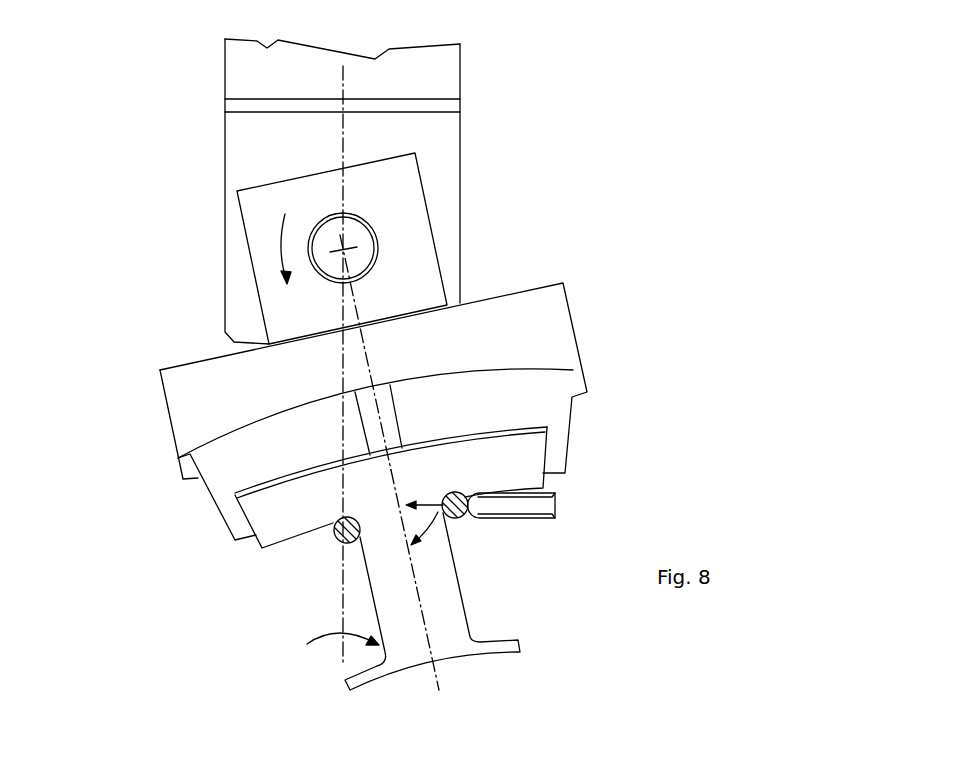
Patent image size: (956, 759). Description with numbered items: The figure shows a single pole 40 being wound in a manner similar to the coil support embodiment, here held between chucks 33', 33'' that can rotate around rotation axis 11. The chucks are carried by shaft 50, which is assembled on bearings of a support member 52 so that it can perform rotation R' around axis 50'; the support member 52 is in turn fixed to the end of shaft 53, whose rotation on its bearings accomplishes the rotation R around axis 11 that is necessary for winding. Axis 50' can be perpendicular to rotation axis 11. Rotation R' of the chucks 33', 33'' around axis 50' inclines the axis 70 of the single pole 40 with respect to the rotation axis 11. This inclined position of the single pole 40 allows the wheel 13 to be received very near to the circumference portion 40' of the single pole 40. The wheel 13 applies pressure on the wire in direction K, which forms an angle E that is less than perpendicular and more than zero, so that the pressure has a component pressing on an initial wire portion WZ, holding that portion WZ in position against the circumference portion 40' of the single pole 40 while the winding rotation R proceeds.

The shaft 53 is at (342, 90).
The support member 52 is at (248, 136).
The axis 50' is at (383, 241).
The shaft 50 is at (426, 248).
The rotation R' is at (230, 249).
The chuck 33' is at (410, 378).
The chuck 33'' is at (159, 455).
The wire portion WZ is at (448, 497).
The axis of single pole 70 is at (420, 597).
The single pole 40 is at (344, 504).
The circumference portion 40' is at (488, 478).
The wheel 13 is at (543, 505).
The direction of pressure K is at (480, 507).
The angle E is at (425, 530).
The rotation axis 11 is at (340, 576).
The rotation R is at (324, 627).